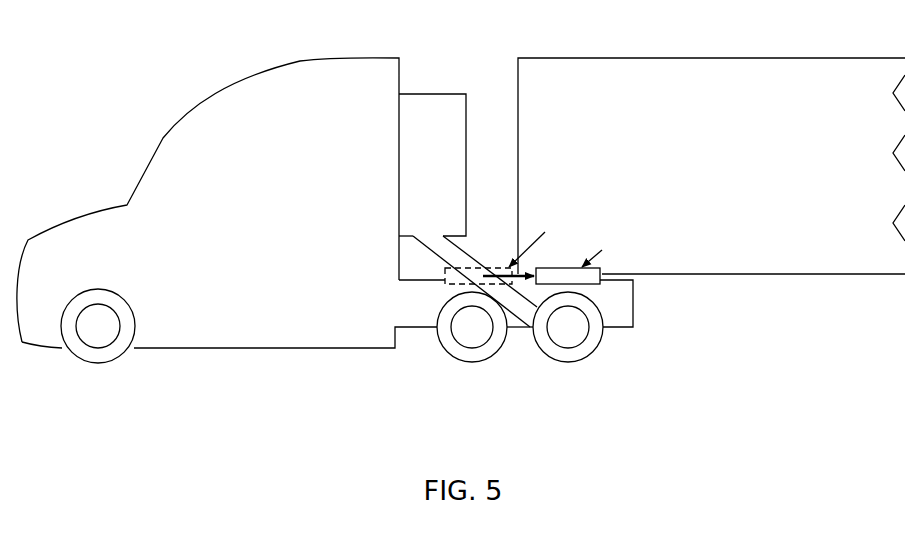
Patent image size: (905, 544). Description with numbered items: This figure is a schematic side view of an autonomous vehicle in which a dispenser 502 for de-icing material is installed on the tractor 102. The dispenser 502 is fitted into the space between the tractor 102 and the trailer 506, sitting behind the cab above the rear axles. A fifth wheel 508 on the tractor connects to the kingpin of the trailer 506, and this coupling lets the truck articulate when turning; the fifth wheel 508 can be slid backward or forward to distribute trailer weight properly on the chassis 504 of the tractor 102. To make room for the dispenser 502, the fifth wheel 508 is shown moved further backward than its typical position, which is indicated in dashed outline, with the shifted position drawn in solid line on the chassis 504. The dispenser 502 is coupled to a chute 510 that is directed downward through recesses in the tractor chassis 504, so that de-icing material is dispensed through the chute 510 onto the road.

The tractor 102 is at (340, 66).
The dispenser 502 is at (455, 174).
The chassis 504 is at (627, 320).
The trailer 506 is at (788, 267).
The fifth wheel 508 is at (602, 282).
The chute 510 is at (468, 258).